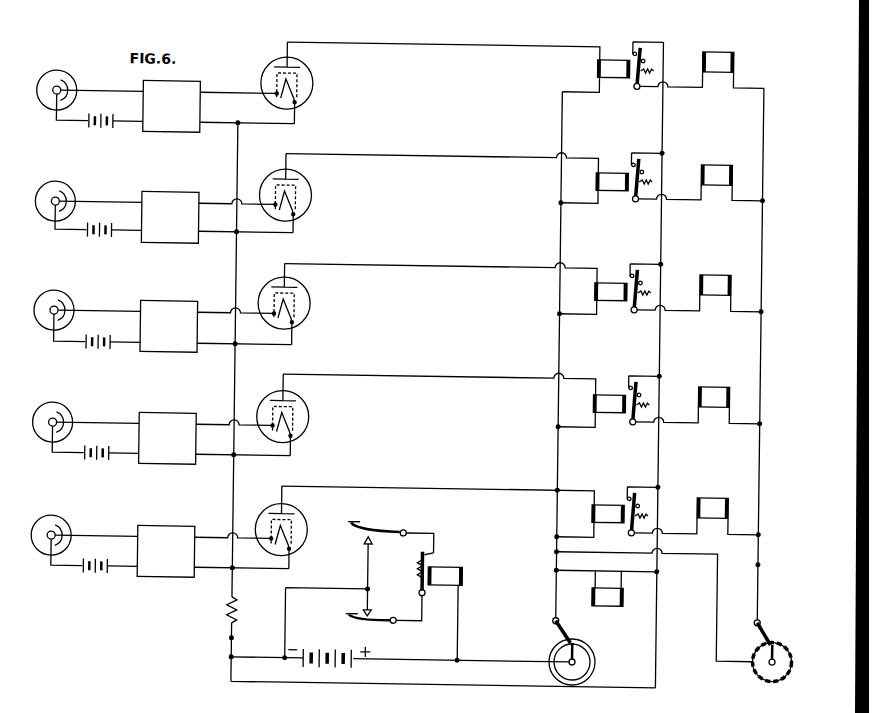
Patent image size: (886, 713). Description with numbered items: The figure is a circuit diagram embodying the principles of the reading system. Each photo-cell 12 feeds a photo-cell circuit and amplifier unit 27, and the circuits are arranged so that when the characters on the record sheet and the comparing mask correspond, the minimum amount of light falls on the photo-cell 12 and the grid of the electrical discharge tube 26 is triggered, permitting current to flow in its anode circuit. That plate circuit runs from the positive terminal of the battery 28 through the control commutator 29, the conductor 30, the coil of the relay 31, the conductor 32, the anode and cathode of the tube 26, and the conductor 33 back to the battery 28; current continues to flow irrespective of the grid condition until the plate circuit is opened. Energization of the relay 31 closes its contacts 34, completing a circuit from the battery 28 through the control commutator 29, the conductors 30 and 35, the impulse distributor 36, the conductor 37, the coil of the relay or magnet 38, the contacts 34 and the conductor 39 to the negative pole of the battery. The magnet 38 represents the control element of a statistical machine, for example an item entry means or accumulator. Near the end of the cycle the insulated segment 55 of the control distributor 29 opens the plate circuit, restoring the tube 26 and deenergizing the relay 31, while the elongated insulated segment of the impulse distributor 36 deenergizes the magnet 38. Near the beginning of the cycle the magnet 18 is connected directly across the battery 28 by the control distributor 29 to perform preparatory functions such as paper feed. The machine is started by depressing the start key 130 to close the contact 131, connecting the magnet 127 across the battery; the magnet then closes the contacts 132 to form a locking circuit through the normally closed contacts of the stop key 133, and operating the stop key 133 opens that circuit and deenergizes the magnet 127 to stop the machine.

The photo-cell 12 is at (41, 193).
The electrical discharge tube 26 is at (305, 100).
The amplifier unit 27 is at (186, 86).
The battery 28 is at (325, 650).
The control commutator 29 is at (583, 666).
The conductor 30 is at (559, 524).
The relay 31 is at (618, 176).
The conductor 32 is at (409, 44).
The conductor 33 is at (237, 641).
The contacts 34 is at (634, 39).
The conductor 35 is at (720, 601).
The impulse distributor 36 is at (764, 670).
The conductor 37 is at (762, 562).
The relay or magnet 38 is at (718, 178).
The conductor 39 is at (660, 641).
The insulated segment 55 is at (575, 640).
The magnet 18 is at (608, 593).
The magnet 127 is at (445, 571).
The start key 130 is at (393, 529).
The contact 131 is at (365, 539).
The contacts 132 is at (437, 552).
The stop key 133 is at (347, 613).